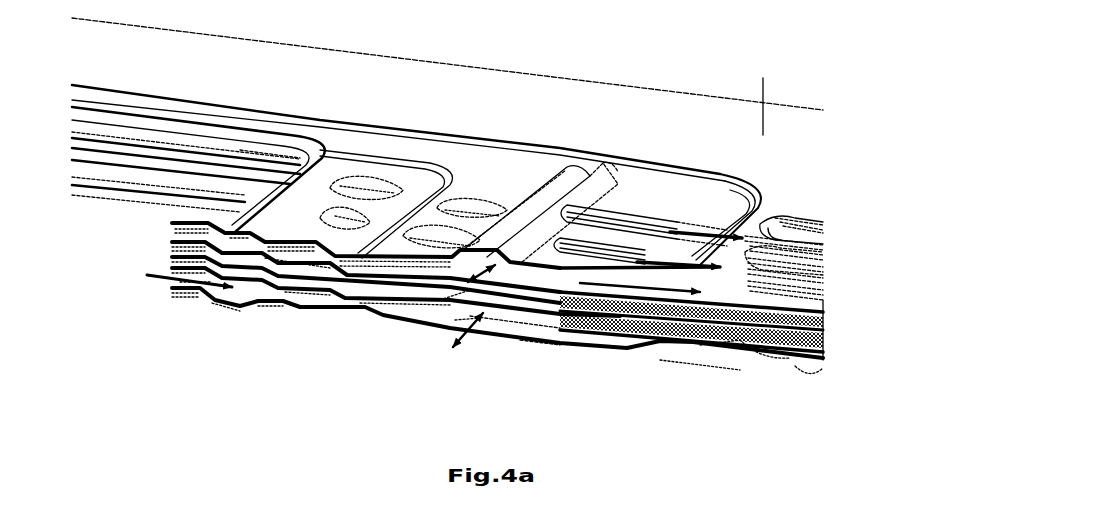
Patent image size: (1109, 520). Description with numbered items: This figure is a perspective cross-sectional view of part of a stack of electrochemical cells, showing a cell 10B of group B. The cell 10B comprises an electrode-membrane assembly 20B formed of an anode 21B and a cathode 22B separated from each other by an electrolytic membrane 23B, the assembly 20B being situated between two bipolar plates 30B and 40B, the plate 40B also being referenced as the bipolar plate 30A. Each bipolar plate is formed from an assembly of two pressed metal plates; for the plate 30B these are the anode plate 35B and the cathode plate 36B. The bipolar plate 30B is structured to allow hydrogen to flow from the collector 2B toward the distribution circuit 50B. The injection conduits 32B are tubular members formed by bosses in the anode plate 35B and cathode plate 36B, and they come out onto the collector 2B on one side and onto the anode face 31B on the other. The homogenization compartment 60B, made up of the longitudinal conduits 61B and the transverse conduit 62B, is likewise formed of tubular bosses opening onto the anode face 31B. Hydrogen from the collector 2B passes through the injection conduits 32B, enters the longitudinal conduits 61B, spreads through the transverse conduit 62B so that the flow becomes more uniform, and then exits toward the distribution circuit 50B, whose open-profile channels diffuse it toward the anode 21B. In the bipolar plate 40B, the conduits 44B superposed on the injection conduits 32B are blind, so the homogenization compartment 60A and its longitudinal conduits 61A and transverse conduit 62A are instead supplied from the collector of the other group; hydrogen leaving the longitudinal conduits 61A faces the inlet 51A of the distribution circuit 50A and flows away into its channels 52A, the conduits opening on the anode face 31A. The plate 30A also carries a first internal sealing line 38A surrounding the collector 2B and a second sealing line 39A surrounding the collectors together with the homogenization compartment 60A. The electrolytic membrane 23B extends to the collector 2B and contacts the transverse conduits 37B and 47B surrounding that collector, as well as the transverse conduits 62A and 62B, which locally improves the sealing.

The collector 2B is at (97, 277).
The cell 10B is at (805, 407).
The electrode-membrane assembly 20B is at (872, 332).
The anode 21B is at (823, 357).
The cathode 22B is at (823, 330).
The electrolytic membrane 23B is at (823, 342).
The bipolar plate 30A is at (158, 225).
The bipolar plate 30B is at (155, 299).
The anode face 31A is at (768, 90).
The anode face 31B is at (357, 300).
The injection conduits 32B is at (278, 316).
The anode plate 35B is at (180, 296).
The cathode plate 36B is at (197, 298).
The transverse conduit 37B is at (228, 318).
The first internal sealing line 38A is at (440, 163).
The second sealing line 39A is at (742, 183).
The bipolar plate 40B is at (404, 242).
The conduits 44B is at (372, 175).
The transverse conduit 47B is at (320, 135).
The distribution circuit 50A is at (848, 219).
The distribution circuit 50B is at (752, 356).
The inlet 51A is at (767, 216).
The channels 52A is at (825, 250).
The homogenization compartment 60A is at (610, 157).
The homogenization compartment 60B is at (473, 366).
The longitudinal conduits 61A is at (622, 212).
The longitudinal conduits 61B is at (544, 350).
The transverse conduit 62A is at (540, 178).
The transverse conduit 62B is at (460, 342).